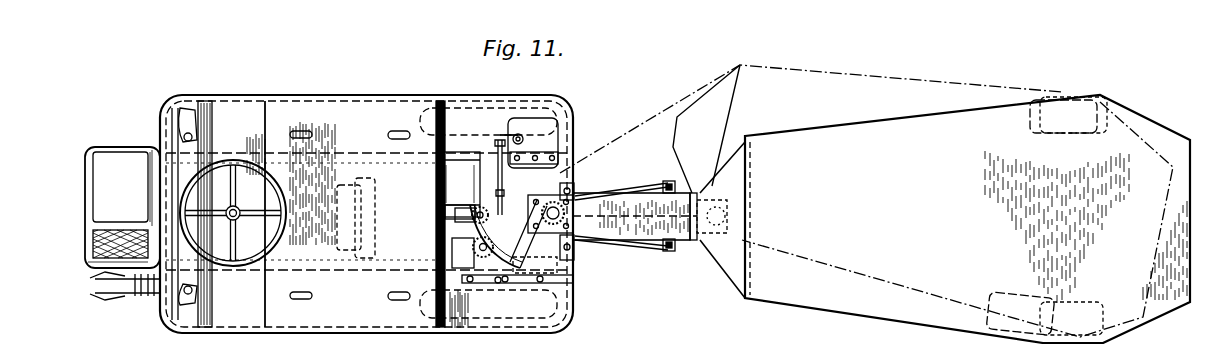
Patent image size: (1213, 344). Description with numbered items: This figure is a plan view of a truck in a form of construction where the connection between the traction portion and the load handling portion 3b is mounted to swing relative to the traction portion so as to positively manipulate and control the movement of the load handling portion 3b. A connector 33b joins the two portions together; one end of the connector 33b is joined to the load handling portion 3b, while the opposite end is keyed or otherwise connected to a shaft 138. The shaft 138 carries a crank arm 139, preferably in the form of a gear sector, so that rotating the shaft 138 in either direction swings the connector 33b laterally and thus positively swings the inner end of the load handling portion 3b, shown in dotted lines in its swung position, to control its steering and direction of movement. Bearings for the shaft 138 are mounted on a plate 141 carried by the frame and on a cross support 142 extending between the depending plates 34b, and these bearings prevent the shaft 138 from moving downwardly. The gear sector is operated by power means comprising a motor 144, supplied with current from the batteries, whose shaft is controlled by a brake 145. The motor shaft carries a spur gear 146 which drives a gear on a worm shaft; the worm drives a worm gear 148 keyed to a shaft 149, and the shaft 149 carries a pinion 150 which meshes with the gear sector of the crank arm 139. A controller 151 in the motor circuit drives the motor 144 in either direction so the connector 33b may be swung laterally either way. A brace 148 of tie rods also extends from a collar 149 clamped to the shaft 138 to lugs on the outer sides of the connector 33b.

The controller 151 is at (190, 122).
The depending plates 34b is at (415, 160).
The motor 144 is at (440, 191).
The spur gear 146 is at (455, 222).
The shaft 149 is at (453, 250).
The crank arm 139 is at (518, 200).
The plate 141 is at (573, 183).
The shaft 138 is at (574, 198).
The cross support 142 is at (572, 257).
The brake 145 is at (460, 278).
The connector 33b is at (650, 216).
The worm gear 148 is at (627, 192).
The pinion 150 is at (672, 186).
The load handling portion 3b is at (875, 204).